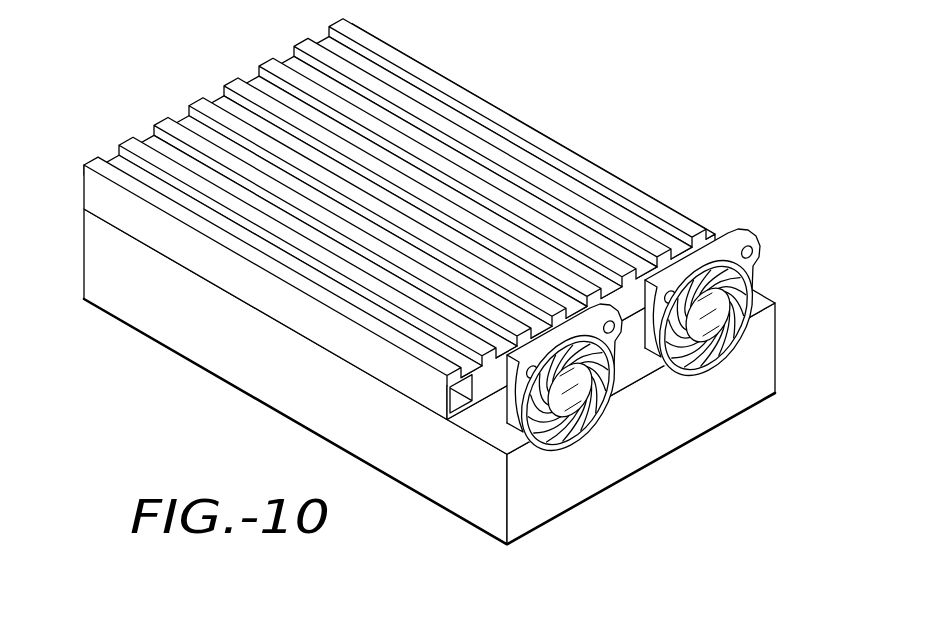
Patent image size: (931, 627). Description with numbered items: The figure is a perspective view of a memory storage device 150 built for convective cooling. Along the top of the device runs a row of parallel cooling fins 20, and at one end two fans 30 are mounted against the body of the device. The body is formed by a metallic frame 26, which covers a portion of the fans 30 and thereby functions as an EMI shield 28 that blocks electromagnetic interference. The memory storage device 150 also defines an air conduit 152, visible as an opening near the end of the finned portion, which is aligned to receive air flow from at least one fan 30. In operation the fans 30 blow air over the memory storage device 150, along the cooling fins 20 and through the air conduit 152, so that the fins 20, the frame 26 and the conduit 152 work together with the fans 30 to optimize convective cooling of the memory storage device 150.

The memory storage device 150 is at (432, 282).
The cooling fins 20 is at (613, 180).
The frame 26 is at (764, 351).
The EMI shield 28 is at (86, 203).
The fans 30 is at (756, 273).
The air conduit 152 is at (452, 399).